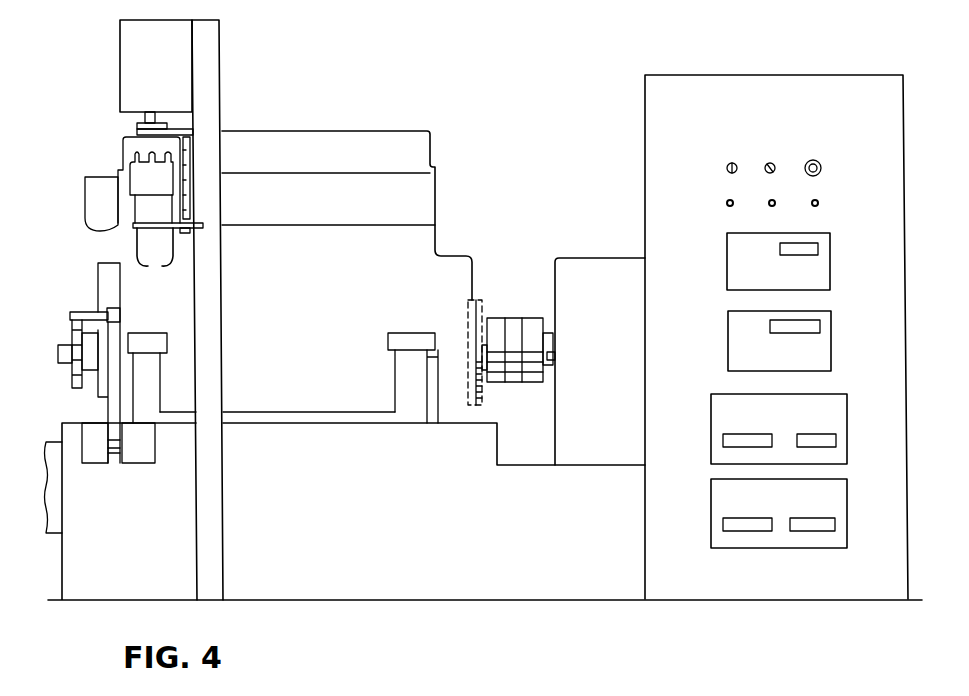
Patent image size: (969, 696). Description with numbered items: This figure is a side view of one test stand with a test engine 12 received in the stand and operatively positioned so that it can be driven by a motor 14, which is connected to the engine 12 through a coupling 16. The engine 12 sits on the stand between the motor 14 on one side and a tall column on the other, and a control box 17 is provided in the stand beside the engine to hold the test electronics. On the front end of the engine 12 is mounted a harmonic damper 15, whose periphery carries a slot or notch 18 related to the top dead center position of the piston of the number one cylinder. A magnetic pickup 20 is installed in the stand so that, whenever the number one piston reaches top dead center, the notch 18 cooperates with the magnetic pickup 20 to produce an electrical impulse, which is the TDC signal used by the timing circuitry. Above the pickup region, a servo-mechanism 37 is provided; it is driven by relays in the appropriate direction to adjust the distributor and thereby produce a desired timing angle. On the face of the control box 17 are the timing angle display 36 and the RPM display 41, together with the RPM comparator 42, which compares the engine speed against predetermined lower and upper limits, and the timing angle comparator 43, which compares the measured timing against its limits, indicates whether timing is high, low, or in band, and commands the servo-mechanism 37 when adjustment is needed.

The test engine 12 is at (427, 243).
The motor 14 is at (591, 263).
The harmonic damper 15 is at (75, 389).
The coupling 16 is at (513, 320).
The control box 17 is at (652, 138).
The notch 18 is at (68, 345).
The magnetic pickup 20 is at (82, 315).
The timing angle display 36 is at (828, 272).
The servo-mechanism 37 is at (140, 49).
The RPM display 41 is at (828, 352).
The RPM comparator 42 is at (840, 505).
The timing angle comparator 43 is at (840, 428).